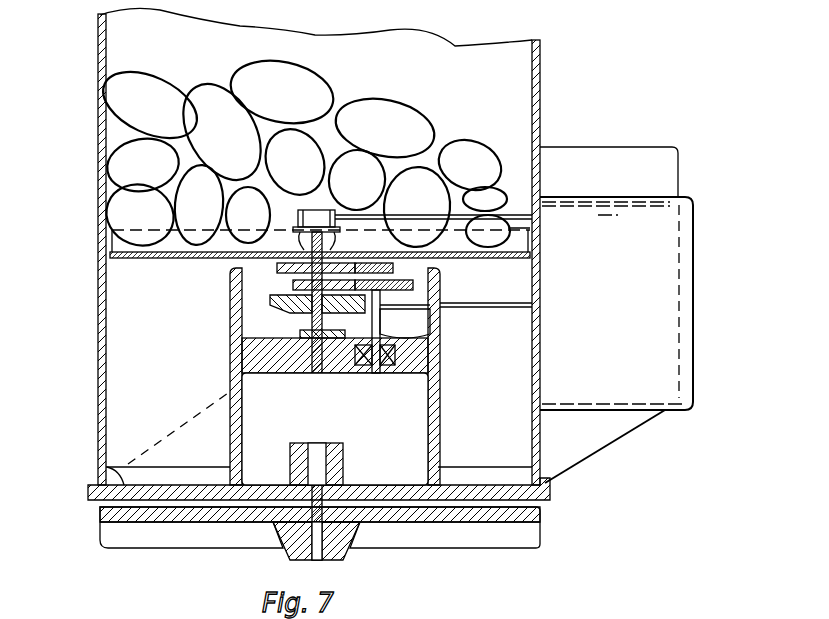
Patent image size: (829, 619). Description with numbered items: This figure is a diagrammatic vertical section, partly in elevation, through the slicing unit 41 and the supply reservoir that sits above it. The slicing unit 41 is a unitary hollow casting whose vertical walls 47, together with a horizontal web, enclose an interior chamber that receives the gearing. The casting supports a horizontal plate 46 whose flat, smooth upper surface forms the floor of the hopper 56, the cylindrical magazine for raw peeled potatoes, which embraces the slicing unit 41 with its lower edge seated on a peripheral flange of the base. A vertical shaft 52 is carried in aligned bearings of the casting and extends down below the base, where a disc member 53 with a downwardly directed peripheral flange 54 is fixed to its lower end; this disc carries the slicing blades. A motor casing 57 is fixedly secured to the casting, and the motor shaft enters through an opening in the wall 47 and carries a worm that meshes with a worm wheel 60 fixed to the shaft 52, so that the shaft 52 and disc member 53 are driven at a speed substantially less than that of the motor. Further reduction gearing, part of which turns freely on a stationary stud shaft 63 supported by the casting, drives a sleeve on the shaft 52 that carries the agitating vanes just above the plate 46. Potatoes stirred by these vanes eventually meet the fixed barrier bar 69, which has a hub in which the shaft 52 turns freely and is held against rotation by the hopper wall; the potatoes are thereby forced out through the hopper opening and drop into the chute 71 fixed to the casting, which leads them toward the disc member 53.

The slicing unit 41 is at (88, 290).
The horizontal plate 46 is at (200, 260).
The vertical walls 47 is at (230, 425).
The vertical shaft 52 is at (320, 420).
The disc member 53 is at (237, 532).
The peripheral flange 54 is at (100, 537).
The hopper 56 is at (580, 106).
The motor casing 57 is at (682, 258).
The worm wheel 60 is at (287, 312).
The stationary stud shaft 63 is at (432, 322).
The fixed barrier bar 69 is at (515, 210).
The chute 71 is at (676, 162).